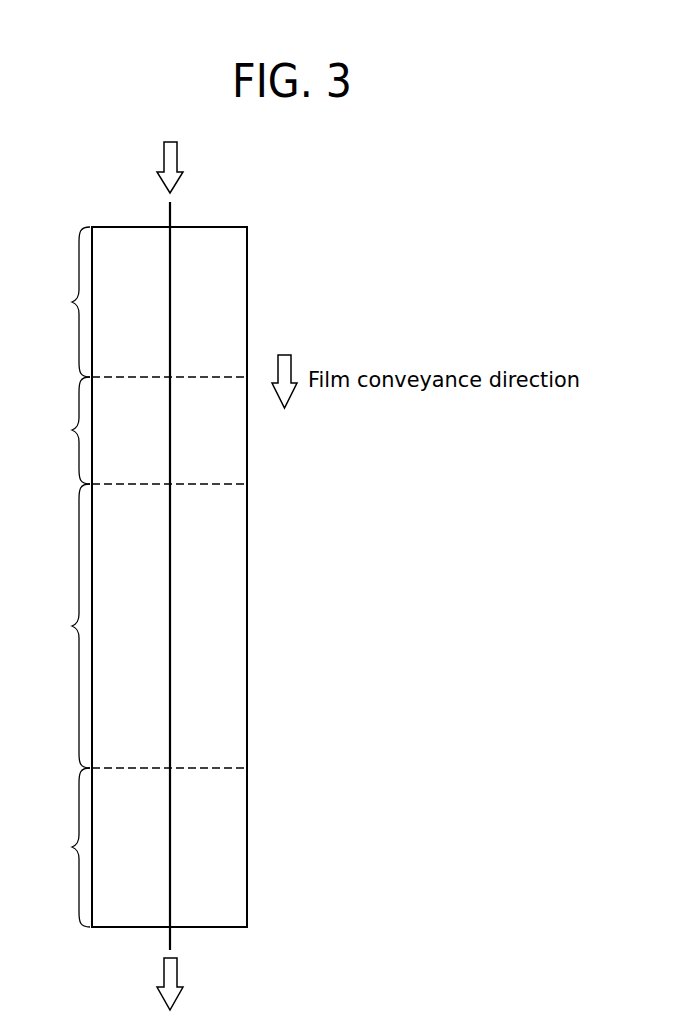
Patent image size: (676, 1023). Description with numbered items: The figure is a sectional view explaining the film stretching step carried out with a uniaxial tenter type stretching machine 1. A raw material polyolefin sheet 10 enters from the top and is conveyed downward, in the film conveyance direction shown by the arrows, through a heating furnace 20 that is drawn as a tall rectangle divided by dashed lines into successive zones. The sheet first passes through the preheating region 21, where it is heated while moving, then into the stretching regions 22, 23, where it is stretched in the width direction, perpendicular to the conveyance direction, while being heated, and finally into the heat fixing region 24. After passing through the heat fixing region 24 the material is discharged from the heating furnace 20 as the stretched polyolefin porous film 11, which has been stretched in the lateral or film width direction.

The uniaxial tenter type stretching machine 1 is at (340, 236).
The raw material polyolefin sheet 10 is at (170, 215).
The polyolefin porous film 11 is at (170, 940).
The heating furnace 20 is at (125, 227).
The preheating region 21 is at (143, 302).
The stretching region 22 is at (142, 430).
The stretching region 23 is at (142, 626).
The heat fixing region 24 is at (63, 847).